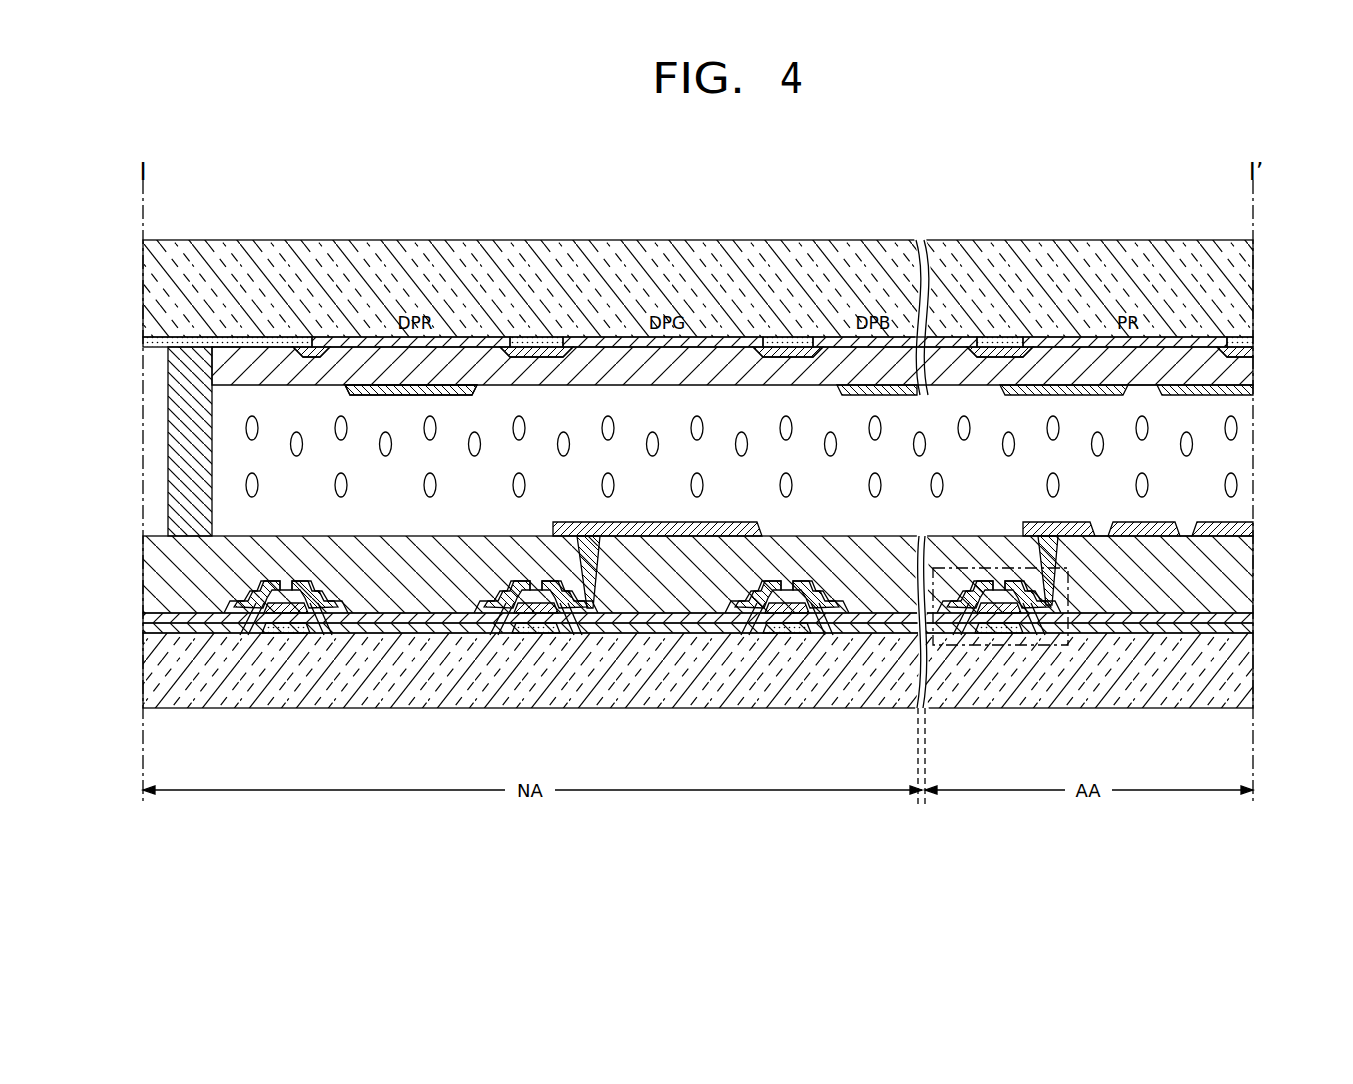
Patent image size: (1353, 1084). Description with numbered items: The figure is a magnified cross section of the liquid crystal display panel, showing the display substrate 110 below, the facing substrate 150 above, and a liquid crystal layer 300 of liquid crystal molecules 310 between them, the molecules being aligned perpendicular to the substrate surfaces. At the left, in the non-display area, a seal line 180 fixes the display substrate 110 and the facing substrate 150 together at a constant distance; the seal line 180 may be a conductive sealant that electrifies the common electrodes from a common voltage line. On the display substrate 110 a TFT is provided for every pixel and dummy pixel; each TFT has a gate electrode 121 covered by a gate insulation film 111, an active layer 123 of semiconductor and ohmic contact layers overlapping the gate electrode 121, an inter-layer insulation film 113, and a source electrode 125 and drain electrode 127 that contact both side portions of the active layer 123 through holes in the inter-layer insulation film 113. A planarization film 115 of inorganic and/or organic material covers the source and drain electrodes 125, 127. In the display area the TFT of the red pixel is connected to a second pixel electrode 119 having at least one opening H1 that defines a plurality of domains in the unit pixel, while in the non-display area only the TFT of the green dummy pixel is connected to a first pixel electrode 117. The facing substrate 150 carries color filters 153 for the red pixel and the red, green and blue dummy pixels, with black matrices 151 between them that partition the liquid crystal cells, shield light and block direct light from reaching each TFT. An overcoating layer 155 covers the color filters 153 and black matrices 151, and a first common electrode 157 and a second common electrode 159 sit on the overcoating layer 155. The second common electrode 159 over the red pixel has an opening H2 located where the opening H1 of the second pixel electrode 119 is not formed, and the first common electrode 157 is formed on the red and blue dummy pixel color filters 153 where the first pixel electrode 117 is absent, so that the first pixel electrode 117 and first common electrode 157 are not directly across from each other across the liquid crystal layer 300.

The display substrate 110 is at (1245, 675).
The gate insulation film 111 is at (1250, 629).
The inter-layer insulation film 113 is at (1250, 612).
The planarization film 115 is at (1243, 560).
The first pixel electrode 117 is at (678, 540).
The second pixel electrode 119 is at (1250, 526).
The gate electrode 121 is at (1003, 630).
The active layer 123 is at (990, 614).
The source electrode 125 is at (948, 615).
The drain electrode 127 is at (1040, 612).
The facing substrate 150 is at (1240, 275).
The black matrices 151 is at (1250, 338).
The color filters 153 is at (1245, 353).
The overcoating layer 155 is at (1243, 371).
The first common electrode 157 is at (345, 388).
The second common electrode 159 is at (1250, 390).
The seal line 180 is at (170, 450).
The liquid crystal layer 300 is at (1235, 460).
The liquid crystal molecules 310 is at (1237, 487).
The opening H1 is at (1190, 536).
The opening H2 is at (1135, 390).
The thin film transistor TFT is at (985, 568).